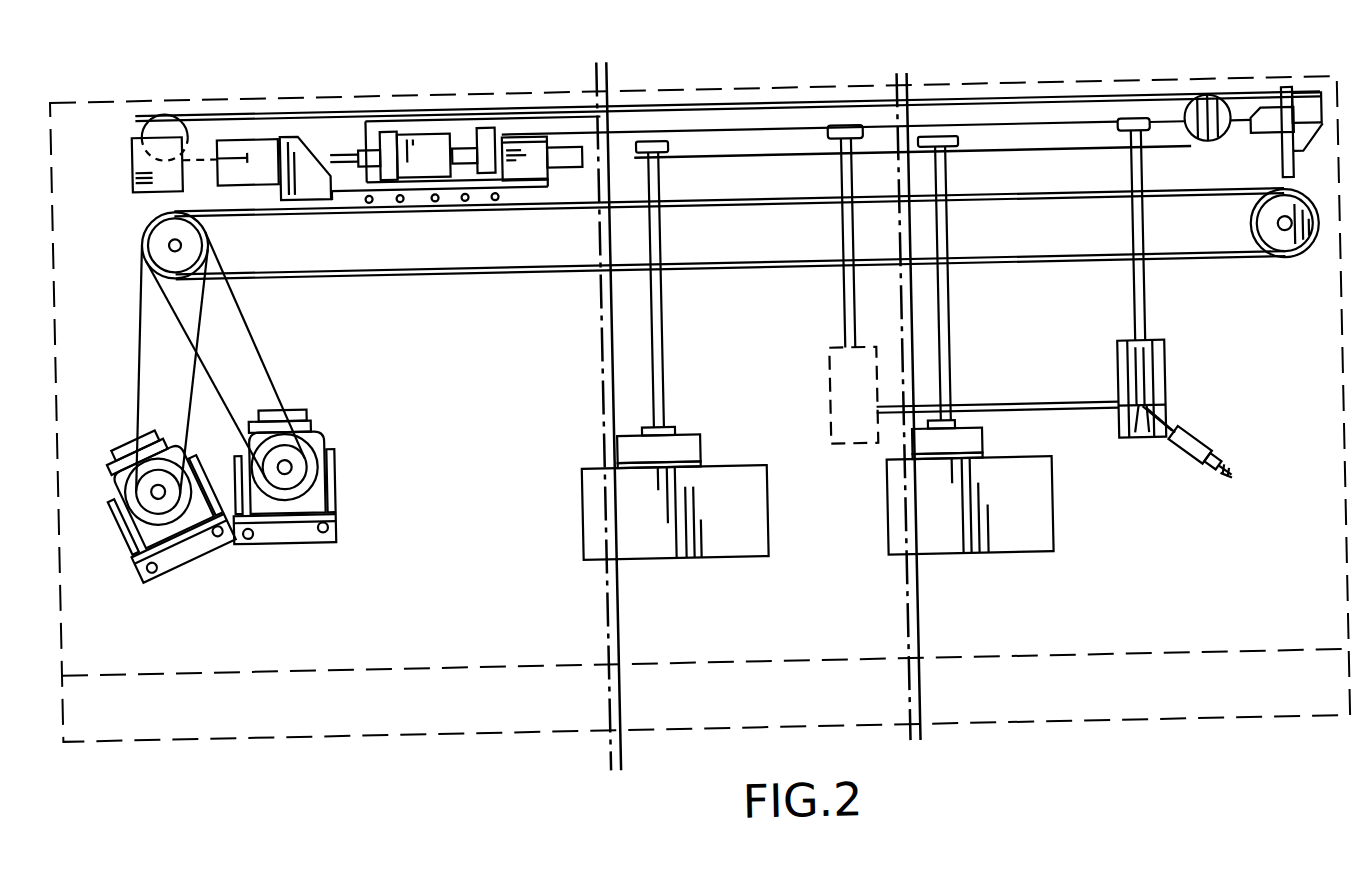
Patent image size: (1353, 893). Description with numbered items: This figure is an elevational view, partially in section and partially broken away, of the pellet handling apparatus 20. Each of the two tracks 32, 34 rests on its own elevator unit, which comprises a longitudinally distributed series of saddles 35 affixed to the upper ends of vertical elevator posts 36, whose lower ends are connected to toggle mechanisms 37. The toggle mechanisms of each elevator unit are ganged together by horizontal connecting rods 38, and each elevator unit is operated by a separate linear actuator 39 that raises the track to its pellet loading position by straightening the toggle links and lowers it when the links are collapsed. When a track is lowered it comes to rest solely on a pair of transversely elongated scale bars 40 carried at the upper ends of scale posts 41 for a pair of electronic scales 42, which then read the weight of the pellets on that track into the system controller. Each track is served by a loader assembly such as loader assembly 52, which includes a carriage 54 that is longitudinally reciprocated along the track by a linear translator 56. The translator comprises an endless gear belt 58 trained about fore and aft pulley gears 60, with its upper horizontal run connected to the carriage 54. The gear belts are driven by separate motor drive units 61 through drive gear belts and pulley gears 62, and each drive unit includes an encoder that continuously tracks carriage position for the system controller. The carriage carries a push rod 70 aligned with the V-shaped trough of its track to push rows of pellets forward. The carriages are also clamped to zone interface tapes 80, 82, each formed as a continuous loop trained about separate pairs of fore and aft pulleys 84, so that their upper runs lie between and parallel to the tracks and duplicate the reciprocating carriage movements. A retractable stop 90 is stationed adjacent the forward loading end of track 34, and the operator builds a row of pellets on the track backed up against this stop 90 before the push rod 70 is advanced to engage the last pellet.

The apparatus 20 is at (563, 798).
The track 32 is at (762, 130).
The track 34 is at (728, 132).
The saddle 35 is at (848, 142).
The elevator post 36 is at (840, 192).
The toggle mechanism 37 is at (814, 394).
The connecting rod 38 is at (1081, 434).
The linear actuator 39 is at (1185, 485).
The scale bar 40 is at (658, 155).
The scale post 41 is at (653, 331).
The electronic scale 42 is at (688, 450).
The loader assembly 52 is at (417, 118).
The carriage 54 is at (530, 190).
The linear translator 56 is at (428, 286).
The endless gear belt 58 is at (790, 279).
The pulley gear 60 is at (139, 246).
The motor drive unit 61 is at (313, 437).
The drive gear belt and pulley gears 62 is at (242, 335).
The push rod 70 is at (488, 124).
The zone interface tape 80 is at (242, 117).
The zone interface tape 82 is at (330, 167).
The pulley 84 is at (158, 124).
The retractable stop 90 is at (1272, 133).